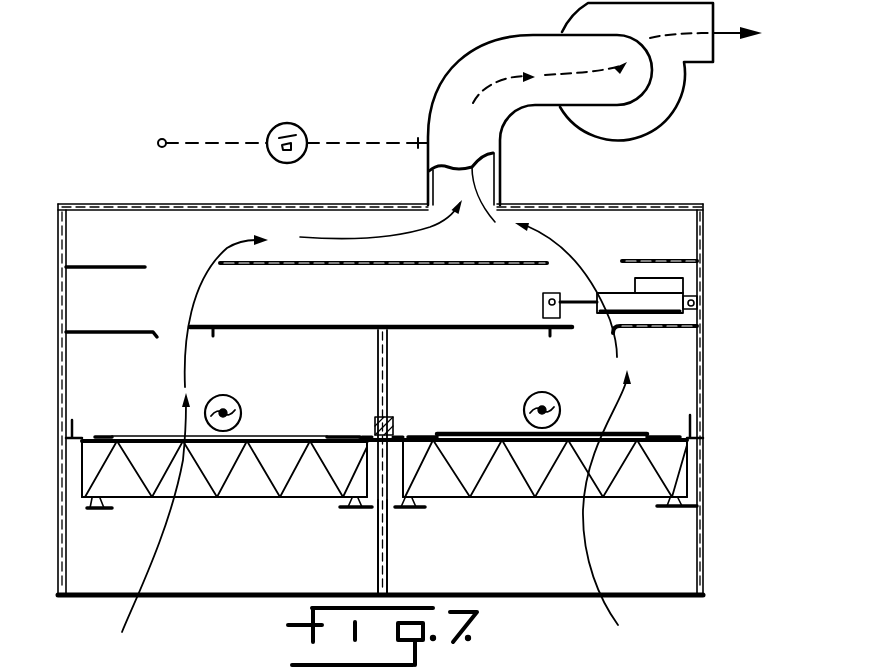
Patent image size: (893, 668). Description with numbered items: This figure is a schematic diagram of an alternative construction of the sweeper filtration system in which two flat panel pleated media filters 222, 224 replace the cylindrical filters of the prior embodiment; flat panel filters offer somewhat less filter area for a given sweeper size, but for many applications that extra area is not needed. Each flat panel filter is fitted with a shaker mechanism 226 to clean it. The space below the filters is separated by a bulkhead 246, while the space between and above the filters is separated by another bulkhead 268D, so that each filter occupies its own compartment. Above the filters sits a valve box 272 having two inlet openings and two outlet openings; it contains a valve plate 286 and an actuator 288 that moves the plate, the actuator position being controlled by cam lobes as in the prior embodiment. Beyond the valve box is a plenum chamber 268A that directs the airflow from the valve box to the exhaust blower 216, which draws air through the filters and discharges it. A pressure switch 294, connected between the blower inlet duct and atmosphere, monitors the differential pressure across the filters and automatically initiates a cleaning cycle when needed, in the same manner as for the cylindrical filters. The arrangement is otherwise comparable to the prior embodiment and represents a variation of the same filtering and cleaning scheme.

The plenum chamber 268A is at (147, 230).
The pressure switch 294 is at (293, 123).
The exhaust blower 216 is at (657, 132).
The valve plate 286 is at (203, 325).
The valve box 272 is at (381, 258).
The actuator 288 is at (672, 300).
The bulkhead 268D is at (387, 372).
The bulkhead 246 is at (390, 558).
The flat panel filter 224 is at (270, 500).
The flat panel filter 222 is at (513, 490).
The shaker mechanism 226 is at (530, 390).